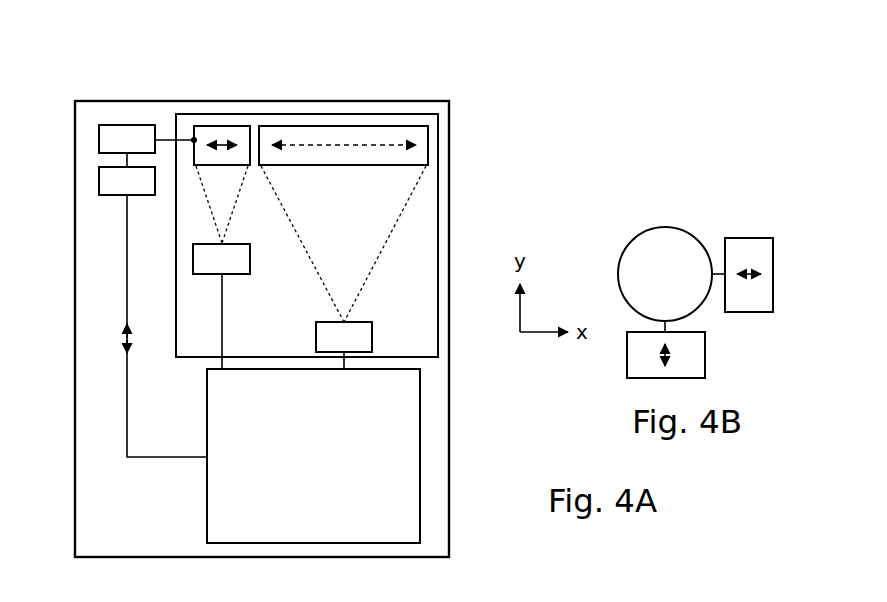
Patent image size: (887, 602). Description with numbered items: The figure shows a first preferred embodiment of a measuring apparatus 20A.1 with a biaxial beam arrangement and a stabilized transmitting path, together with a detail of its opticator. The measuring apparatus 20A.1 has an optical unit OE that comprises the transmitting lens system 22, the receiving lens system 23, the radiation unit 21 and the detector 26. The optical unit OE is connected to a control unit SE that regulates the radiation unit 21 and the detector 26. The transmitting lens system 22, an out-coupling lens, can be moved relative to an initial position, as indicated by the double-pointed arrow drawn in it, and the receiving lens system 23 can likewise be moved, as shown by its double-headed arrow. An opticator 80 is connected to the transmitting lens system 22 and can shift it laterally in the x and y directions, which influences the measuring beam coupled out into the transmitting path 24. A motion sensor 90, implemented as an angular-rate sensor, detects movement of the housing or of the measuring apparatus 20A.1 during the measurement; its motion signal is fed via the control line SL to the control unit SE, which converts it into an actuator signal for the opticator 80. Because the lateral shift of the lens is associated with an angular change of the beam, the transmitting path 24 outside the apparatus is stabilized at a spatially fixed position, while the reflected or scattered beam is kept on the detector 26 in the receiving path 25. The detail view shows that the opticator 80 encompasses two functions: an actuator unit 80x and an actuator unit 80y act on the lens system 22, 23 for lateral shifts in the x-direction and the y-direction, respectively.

In FIG. 4A, the measuring apparatus 20A.1 is at (327, 77).
In FIG. 4A, the optical unit OE is at (438, 210).
In FIG. 4A, the control unit SE is at (420, 445).
In FIG. 4A, the control line SL is at (127, 400).
In FIG. 4A, the opticator 80 is at (99, 134).
In FIG. 4A, the motion sensor 90 is at (99, 184).
In FIG. 4A, the transmitting lens system 22 is at (225, 126).
In FIG. 4B, the transmitting lens system 22 is at (653, 235).
In FIG. 4A, the receiving lens system 23 is at (428, 143).
In FIG. 4B, the receiving lens system 23 is at (640, 222).
In FIG. 4A, the transmitting path 24 is at (233, 196).
In FIG. 4A, the receiving path 25 is at (355, 230).
In FIG. 4A, the radiation unit 21 is at (207, 274).
In FIG. 4A, the detector 26 is at (372, 335).
In FIG. 4B, the actuator unit 80x is at (750, 238).
In FIG. 4B, the actuator unit 80y is at (705, 362).